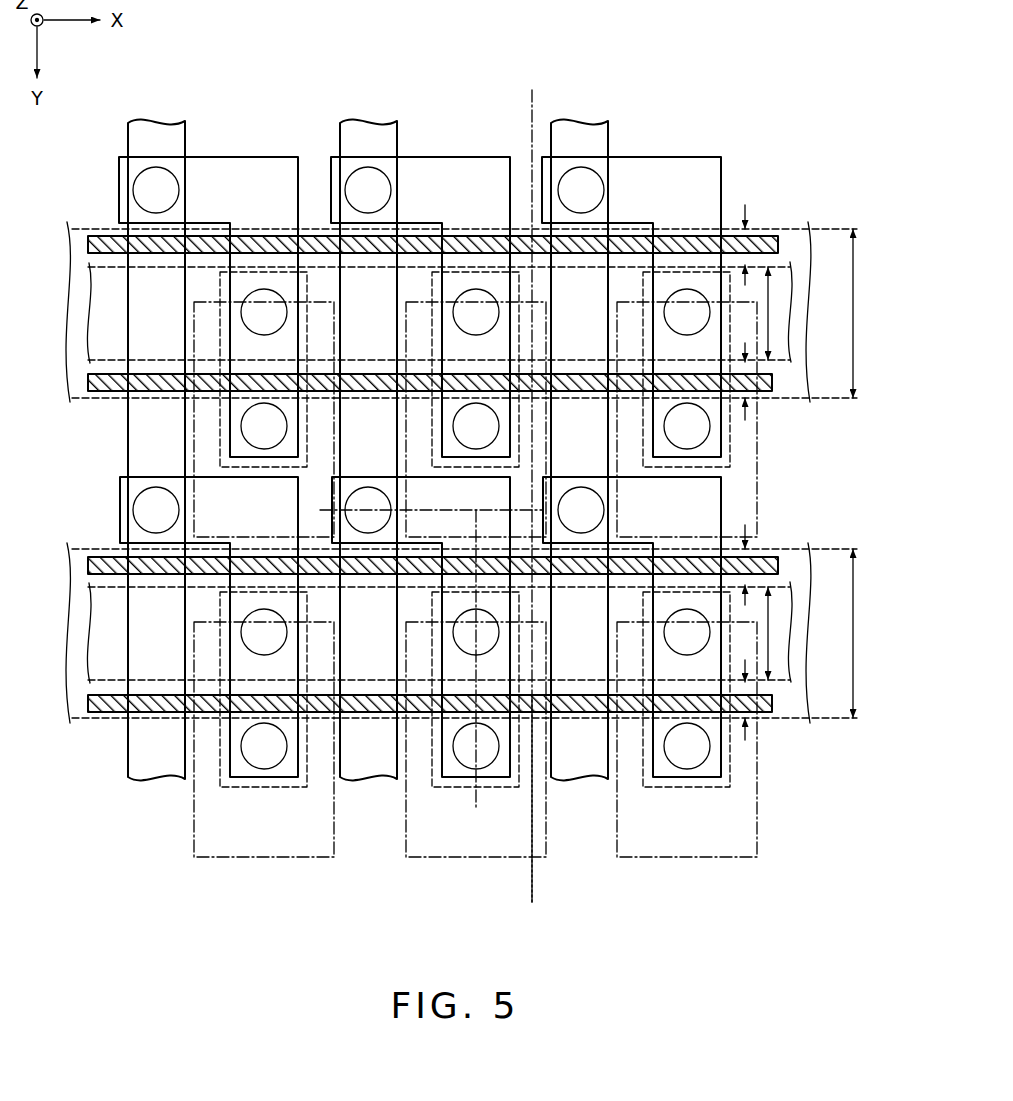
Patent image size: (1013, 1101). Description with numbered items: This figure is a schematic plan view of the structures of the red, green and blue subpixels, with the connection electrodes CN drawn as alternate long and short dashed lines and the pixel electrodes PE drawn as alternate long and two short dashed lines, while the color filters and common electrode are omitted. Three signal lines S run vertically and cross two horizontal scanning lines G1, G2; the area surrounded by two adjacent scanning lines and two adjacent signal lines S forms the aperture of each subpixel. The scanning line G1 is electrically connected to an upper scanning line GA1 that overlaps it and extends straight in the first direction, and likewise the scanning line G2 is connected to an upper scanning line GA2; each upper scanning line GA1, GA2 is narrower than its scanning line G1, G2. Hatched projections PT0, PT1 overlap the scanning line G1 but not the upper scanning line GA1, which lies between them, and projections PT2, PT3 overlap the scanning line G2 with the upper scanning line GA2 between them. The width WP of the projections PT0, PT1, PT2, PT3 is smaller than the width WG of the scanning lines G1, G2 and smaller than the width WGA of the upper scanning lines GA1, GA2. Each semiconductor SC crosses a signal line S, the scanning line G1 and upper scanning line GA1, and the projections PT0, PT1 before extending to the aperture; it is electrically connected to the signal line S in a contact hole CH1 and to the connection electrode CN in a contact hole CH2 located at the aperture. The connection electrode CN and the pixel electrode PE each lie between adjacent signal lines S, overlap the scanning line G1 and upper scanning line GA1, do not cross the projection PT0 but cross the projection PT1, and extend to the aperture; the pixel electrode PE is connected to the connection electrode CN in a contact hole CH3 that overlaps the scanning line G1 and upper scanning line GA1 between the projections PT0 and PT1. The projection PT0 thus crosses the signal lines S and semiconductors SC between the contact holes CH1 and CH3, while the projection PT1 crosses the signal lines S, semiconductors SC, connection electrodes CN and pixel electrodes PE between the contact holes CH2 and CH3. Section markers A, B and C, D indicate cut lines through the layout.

The signal line S is at (157, 126).
The semiconductor SC is at (268, 157).
The contact hole CH1 is at (178, 186).
The contact hole CH2 is at (241, 428).
The contact hole CH3 is at (264, 289).
The connection electrode CN is at (220, 290).
The pixel electrode PE is at (194, 345).
The projection PT0 is at (88, 244).
The projection PT1 is at (88, 382).
The projection PT2 is at (88, 564).
The projection PT3 is at (88, 704).
The scanning line G1 is at (793, 342).
The scanning line G2 is at (793, 662).
The upper scanning line GA1 is at (776, 298).
The upper scanning line GA2 is at (776, 618).
The width of scanning line WG is at (482, 472).
The width of upper scanning line WGA is at (772, 388).
The width of projection WP is at (751, 240).
The section line A is at (530, 481).
The section line B is at (529, 814).
The section line C is at (474, 671).
The section line D is at (421, 505).